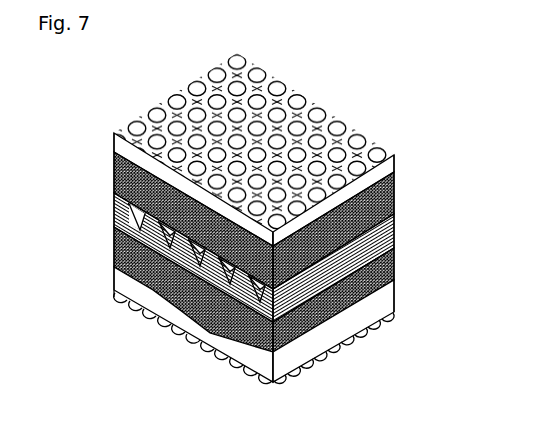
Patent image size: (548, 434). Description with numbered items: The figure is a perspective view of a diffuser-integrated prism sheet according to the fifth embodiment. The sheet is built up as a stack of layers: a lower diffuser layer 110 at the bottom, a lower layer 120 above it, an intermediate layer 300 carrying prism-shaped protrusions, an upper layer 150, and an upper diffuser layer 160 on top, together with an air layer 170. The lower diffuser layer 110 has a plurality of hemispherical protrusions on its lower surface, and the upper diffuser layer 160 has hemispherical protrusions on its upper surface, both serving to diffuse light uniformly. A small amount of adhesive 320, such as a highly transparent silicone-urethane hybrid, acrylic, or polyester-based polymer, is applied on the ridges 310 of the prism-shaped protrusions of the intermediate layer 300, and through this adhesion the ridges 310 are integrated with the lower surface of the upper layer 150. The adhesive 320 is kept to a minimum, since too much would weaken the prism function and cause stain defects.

The lower diffuser layer 110 is at (385, 307).
The lower layer 120 is at (395, 263).
The upper layer 150 is at (115, 173).
The upper diffuser layer 160 is at (115, 142).
The air layer 170 is at (287, 347).
The intermediate layer 300 is at (213, 287).
The ridges 310 is at (210, 333).
The adhesive 320 is at (180, 310).